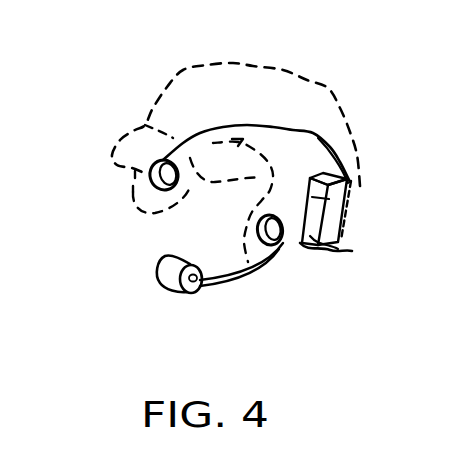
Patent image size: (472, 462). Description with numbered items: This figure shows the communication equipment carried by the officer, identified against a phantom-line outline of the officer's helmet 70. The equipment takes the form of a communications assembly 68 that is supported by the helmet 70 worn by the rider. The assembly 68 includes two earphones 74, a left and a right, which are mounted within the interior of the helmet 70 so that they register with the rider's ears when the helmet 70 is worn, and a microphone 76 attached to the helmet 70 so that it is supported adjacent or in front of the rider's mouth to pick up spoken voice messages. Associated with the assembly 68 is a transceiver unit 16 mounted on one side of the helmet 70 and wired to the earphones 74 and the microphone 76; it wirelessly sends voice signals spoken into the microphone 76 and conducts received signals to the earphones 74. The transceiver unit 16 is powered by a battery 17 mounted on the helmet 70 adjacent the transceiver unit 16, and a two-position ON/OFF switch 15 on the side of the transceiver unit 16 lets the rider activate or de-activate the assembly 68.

The two-position ON/OFF switch 15 is at (355, 212).
The transceiver unit 16 is at (330, 247).
The battery 17 is at (352, 188).
The communications assembly 68 is at (243, 280).
The helmet 70 is at (330, 93).
The earphones 74 is at (150, 178).
The microphone 76 is at (160, 283).